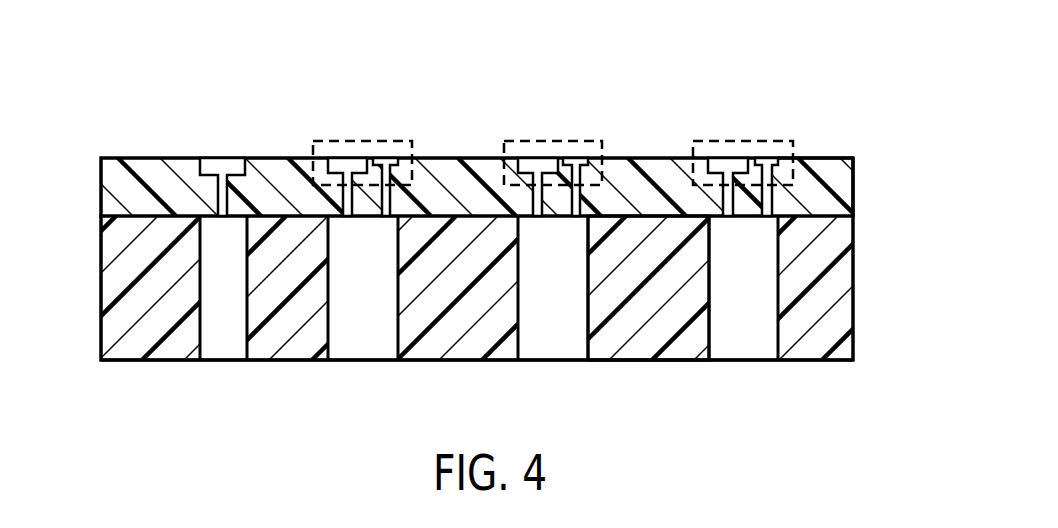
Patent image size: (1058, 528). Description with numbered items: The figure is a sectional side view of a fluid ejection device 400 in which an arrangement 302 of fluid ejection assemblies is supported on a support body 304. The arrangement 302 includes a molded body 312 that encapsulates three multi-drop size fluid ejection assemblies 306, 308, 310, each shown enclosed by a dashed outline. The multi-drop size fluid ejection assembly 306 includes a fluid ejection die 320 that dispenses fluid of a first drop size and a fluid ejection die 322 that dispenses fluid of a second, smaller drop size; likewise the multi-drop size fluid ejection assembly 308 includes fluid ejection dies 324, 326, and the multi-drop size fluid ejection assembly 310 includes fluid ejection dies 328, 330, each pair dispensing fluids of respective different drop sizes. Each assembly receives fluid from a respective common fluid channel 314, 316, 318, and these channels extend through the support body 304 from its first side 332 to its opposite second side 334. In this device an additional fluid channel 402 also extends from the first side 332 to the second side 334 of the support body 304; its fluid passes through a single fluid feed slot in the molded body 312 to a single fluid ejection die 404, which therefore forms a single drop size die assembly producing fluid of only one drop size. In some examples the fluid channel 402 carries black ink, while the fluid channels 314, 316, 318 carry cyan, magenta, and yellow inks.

The fluid ejection device 400 is at (248, 56).
The arrangement 302 is at (93, 160).
The support body 304 is at (93, 218).
The multi-drop size fluid ejection assembly 306 is at (330, 141).
The multi-drop size fluid ejection assembly 308 is at (515, 141).
The multi-drop size fluid ejection assembly 310 is at (708, 141).
The molded body 312 is at (837, 178).
The common fluid channel 314 is at (357, 325).
The common fluid channel 316 is at (548, 325).
The common fluid channel 318 is at (738, 325).
The fluid ejection die 320 is at (345, 158).
The fluid ejection die 322 is at (388, 162).
The fluid ejection die 324 is at (540, 167).
The fluid ejection die 326 is at (580, 160).
The fluid ejection die 328 is at (732, 167).
The fluid ejection die 330 is at (767, 160).
The first side 332 is at (635, 360).
The second side 334 is at (652, 218).
The fluid channel 402 is at (218, 325).
The fluid ejection die 404 is at (223, 158).